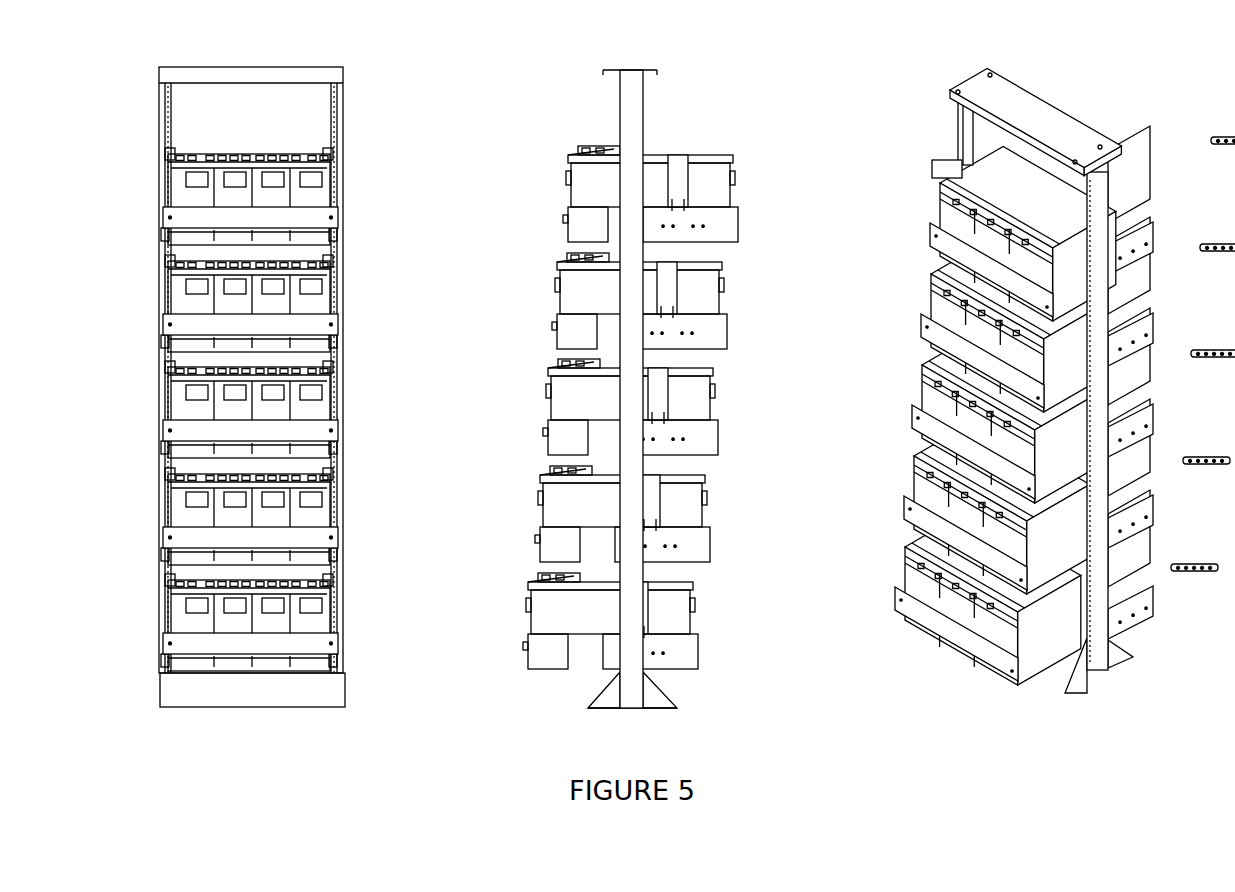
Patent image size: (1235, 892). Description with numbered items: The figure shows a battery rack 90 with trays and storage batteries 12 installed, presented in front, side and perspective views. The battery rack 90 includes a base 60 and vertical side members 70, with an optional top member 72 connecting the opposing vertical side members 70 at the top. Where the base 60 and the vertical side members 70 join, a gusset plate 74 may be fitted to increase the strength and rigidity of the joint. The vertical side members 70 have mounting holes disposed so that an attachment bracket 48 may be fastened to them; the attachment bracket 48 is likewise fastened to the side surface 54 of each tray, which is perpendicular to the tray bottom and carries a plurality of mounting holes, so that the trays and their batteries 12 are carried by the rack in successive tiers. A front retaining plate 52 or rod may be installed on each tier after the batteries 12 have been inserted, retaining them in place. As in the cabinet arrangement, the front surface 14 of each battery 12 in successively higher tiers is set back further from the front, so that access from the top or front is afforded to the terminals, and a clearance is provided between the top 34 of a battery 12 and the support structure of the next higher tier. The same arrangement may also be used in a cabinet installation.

The battery rack 90 is at (157, 92).
The front surface of battery 14 is at (315, 410).
The front retaining plate 52 is at (313, 325).
The base 60 is at (315, 693).
The vertical side member 70 is at (630, 102).
The storage battery 12 is at (695, 403).
The side surface of tray 54 is at (690, 430).
The gusset plate 74 is at (608, 698).
The top member 72 is at (1068, 126).
The top of battery 34 is at (936, 163).
The attachment bracket 48 is at (1077, 453).